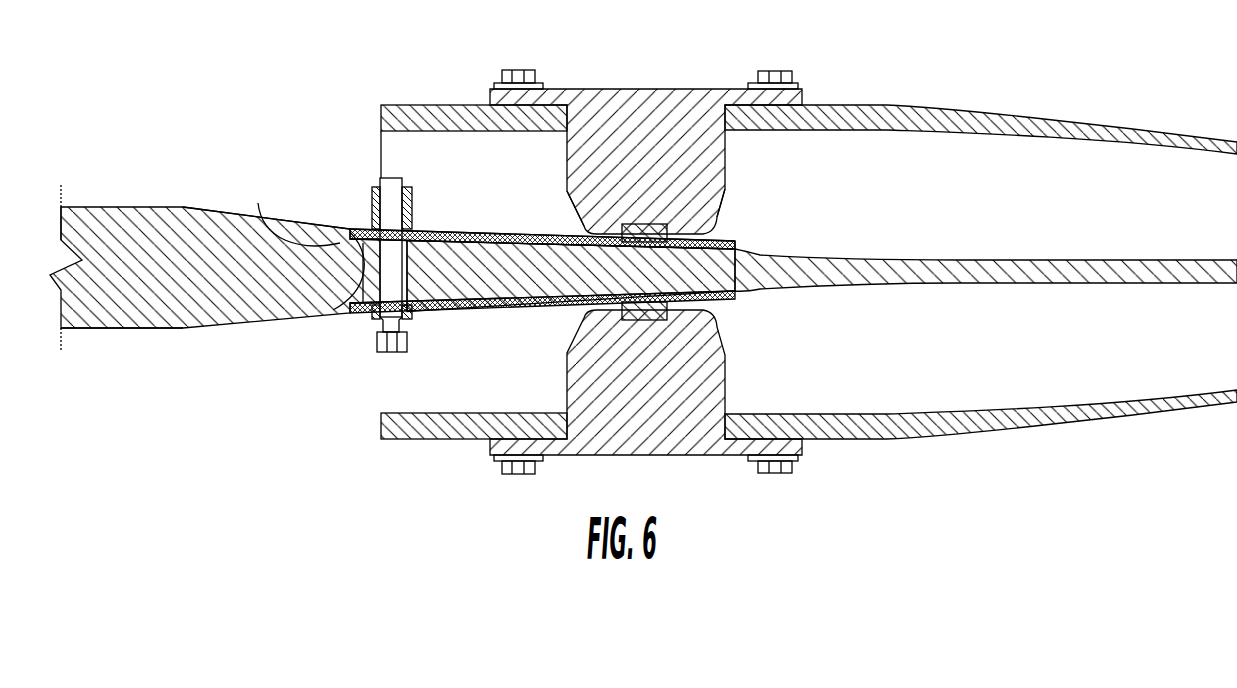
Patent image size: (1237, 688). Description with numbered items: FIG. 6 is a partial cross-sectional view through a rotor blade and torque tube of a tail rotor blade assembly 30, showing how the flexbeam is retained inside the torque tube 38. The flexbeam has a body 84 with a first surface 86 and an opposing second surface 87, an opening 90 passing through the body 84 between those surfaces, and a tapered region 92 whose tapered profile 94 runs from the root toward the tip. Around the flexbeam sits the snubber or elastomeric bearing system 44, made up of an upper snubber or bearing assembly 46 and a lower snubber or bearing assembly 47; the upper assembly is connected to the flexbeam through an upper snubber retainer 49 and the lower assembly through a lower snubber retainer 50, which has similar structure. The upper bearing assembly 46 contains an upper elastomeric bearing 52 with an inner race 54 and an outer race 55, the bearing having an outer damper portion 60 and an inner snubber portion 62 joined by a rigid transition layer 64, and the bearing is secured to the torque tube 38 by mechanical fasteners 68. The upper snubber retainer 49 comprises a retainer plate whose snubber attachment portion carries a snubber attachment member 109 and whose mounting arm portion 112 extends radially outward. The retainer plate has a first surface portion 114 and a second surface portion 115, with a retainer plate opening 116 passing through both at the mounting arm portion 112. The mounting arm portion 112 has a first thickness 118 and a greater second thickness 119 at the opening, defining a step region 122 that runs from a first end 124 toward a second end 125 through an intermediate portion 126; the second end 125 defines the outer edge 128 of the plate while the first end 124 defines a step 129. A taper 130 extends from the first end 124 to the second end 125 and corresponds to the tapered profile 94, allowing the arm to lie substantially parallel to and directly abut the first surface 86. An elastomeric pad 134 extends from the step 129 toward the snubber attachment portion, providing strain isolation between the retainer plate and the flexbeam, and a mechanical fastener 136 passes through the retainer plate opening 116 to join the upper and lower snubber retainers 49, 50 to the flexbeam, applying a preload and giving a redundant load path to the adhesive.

The tail rotor blade assembly 30 is at (181, 391).
The torque tube 38 is at (400, 80).
The snubber or elastomeric bearing system 44 is at (815, 460).
The upper snubber or bearing assembly 46 is at (767, 201).
The lower snubber or bearing assembly 47 is at (802, 388).
The upper snubber retainer 49 is at (752, 243).
The lower snubber retainer 50 is at (493, 440).
The upper elastomeric bearing 52 is at (731, 153).
The inner race 54 is at (562, 234).
The outer race 55 is at (684, 88).
The outer damper portion 60 is at (550, 89).
The inner snubber portion 62 is at (562, 234).
The rigid transition layer 64 is at (567, 172).
The mechanical fasteners 68 is at (810, 76).
The body 84 is at (157, 198).
The first surface 86 is at (88, 207).
The second surface 87 is at (134, 328).
The opening 90 is at (390, 327).
The tapered region 92 is at (279, 357).
The tapered profile 94 is at (340, 232).
The snubber attachment member 109 is at (645, 224).
The mounting arm portion 112 is at (380, 177).
The first surface portion 114 is at (460, 236).
The second surface portion 115 is at (540, 299).
The retainer plate opening 116 is at (370, 227).
The first thickness 118 is at (740, 256).
The second thickness 119 is at (464, 338).
The step region 122 is at (455, 300).
The first end 124 is at (446, 234).
The second end 125 is at (329, 222).
The intermediate portion 126 is at (340, 307).
The outer edge 128 is at (284, 207).
The step 129 is at (421, 218).
The taper 130 is at (462, 335).
The elastomeric pad 134 is at (706, 306).
The mechanical fastener 136 is at (393, 353).